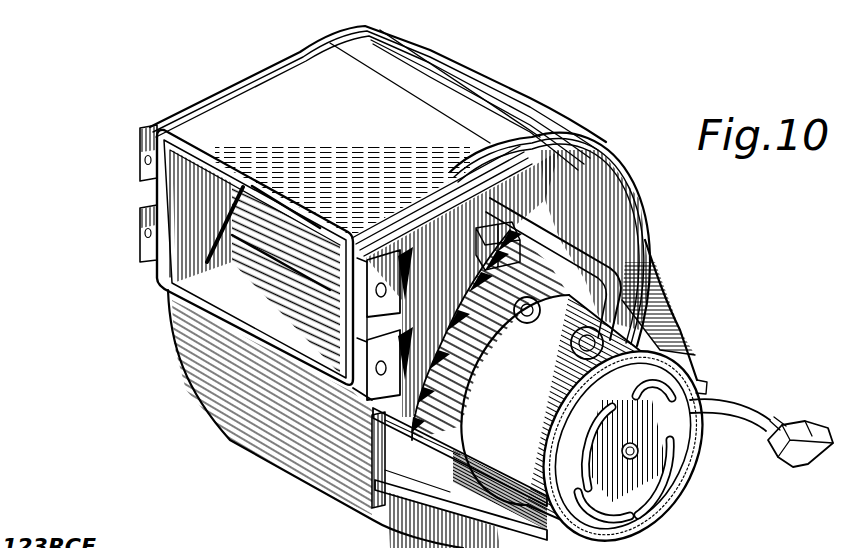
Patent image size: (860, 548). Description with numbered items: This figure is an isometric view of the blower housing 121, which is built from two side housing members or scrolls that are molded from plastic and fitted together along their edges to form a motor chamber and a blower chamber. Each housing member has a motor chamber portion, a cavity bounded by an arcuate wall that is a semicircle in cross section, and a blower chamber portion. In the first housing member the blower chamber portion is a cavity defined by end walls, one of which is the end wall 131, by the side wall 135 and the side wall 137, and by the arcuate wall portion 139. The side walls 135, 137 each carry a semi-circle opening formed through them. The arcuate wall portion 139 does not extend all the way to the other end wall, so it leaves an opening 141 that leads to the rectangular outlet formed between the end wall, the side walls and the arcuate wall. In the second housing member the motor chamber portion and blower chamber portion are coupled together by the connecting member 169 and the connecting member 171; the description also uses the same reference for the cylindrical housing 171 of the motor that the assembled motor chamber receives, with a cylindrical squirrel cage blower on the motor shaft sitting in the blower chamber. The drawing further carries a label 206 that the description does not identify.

The blower housing 121 is at (506, 74).
The side wall 135 is at (330, 355).
The side wall 137 is at (147, 188).
The arcuate wall portion 139 is at (257, 115).
The opening 141 is at (225, 292).
The connecting member 169 is at (545, 230).
The connecting member 171 is at (662, 296).
The motor 206 is at (576, 389).
The end wall 131 is at (163, 541).